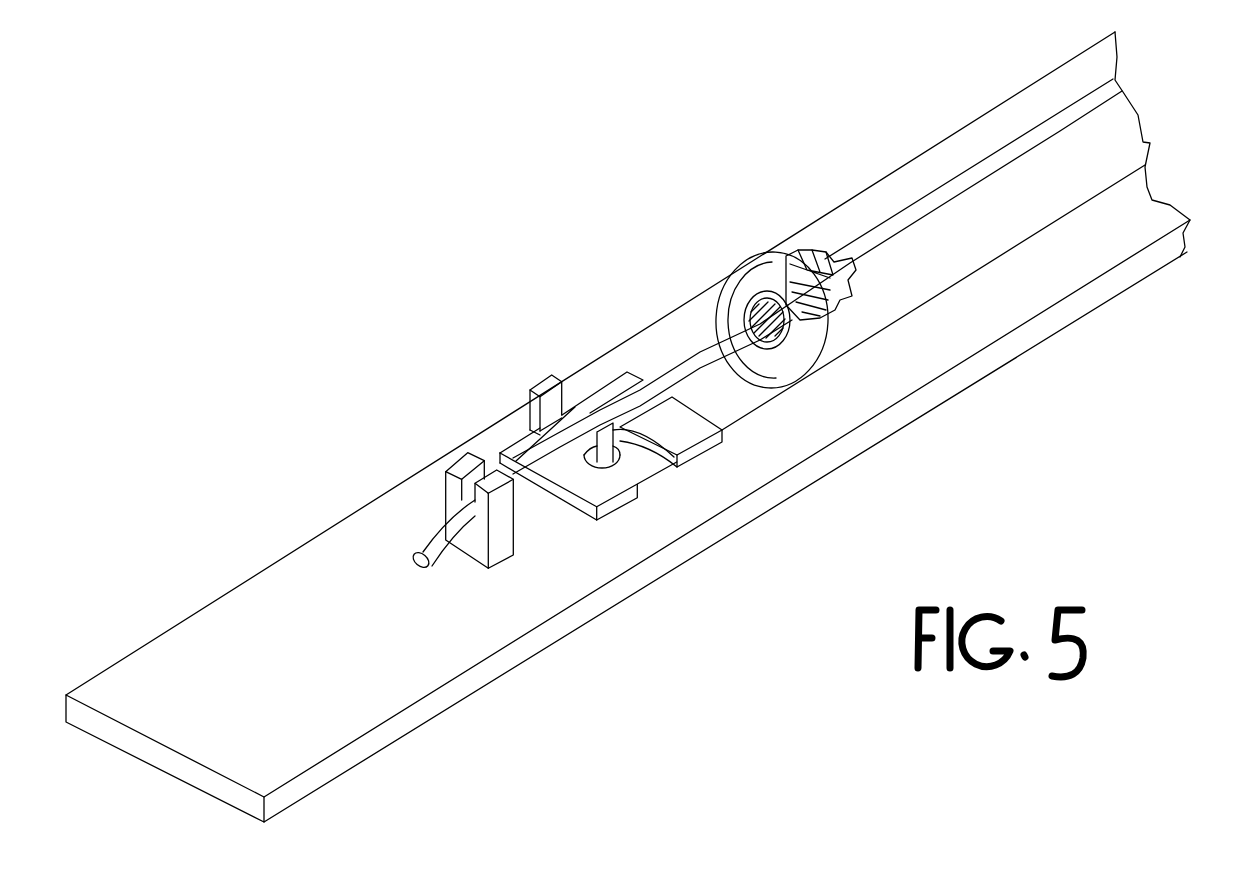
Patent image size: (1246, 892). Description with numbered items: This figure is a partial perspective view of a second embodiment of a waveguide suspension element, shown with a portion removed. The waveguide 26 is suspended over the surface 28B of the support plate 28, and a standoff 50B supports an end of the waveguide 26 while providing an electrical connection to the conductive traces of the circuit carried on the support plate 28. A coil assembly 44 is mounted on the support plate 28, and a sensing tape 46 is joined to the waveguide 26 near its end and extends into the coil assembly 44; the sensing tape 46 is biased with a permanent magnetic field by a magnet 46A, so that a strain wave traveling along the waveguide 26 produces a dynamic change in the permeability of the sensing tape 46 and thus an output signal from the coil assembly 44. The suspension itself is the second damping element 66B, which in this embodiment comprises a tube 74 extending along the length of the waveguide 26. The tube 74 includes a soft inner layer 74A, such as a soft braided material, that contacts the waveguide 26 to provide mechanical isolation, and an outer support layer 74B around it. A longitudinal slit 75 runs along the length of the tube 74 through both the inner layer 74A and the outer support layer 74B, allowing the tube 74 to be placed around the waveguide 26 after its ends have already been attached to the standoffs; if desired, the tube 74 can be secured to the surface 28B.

The waveguide 26 is at (702, 352).
The support plate 28 is at (1030, 334).
The surface 28B is at (1128, 230).
The coil assembly 44 is at (575, 511).
The sensing tape 46 is at (647, 468).
The magnet 46A is at (552, 374).
The standoff 50B is at (463, 461).
The second damping element 66B is at (910, 158).
The tube 74 is at (992, 122).
The inner layer 74A is at (787, 381).
The outer support layer 74B is at (782, 247).
The longitudinal slit 75 is at (1080, 110).